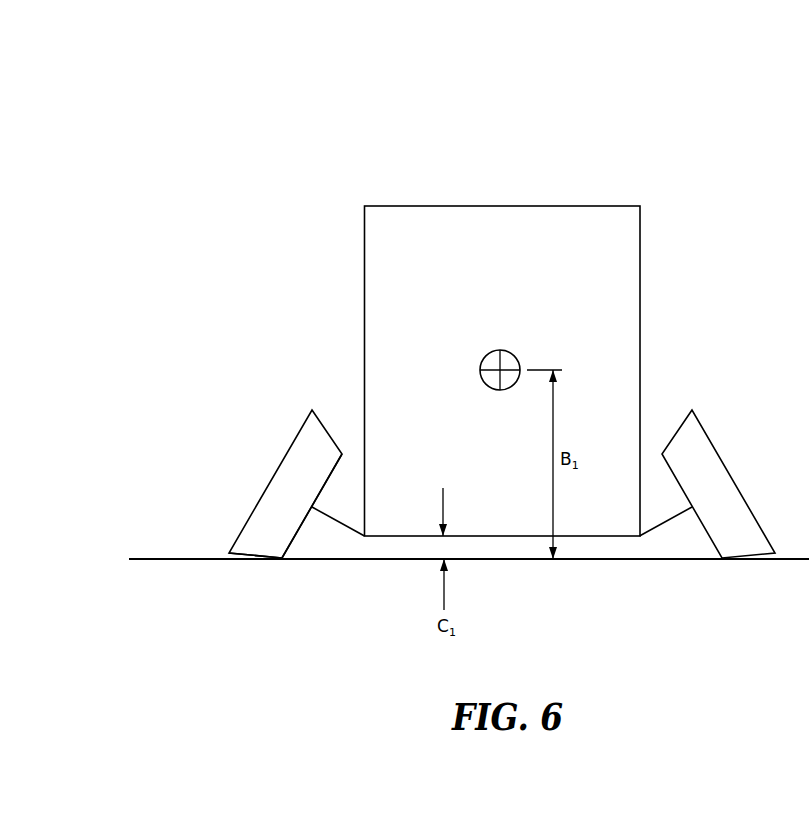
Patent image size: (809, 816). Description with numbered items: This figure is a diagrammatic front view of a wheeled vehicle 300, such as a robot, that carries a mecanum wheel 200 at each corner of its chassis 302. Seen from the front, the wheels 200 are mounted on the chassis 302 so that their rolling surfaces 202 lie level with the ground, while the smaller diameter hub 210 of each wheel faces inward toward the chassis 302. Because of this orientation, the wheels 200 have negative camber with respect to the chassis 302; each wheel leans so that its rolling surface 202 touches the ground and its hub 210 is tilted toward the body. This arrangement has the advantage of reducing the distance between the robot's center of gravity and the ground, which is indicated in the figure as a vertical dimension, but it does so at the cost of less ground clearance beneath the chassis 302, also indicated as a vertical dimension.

The wheeled vehicle 300 is at (388, 127).
The chassis 302 is at (382, 243).
The mecanum wheel 200 is at (297, 432).
The rolling surface 202 is at (262, 560).
The smaller diameter hub 210 is at (302, 527).